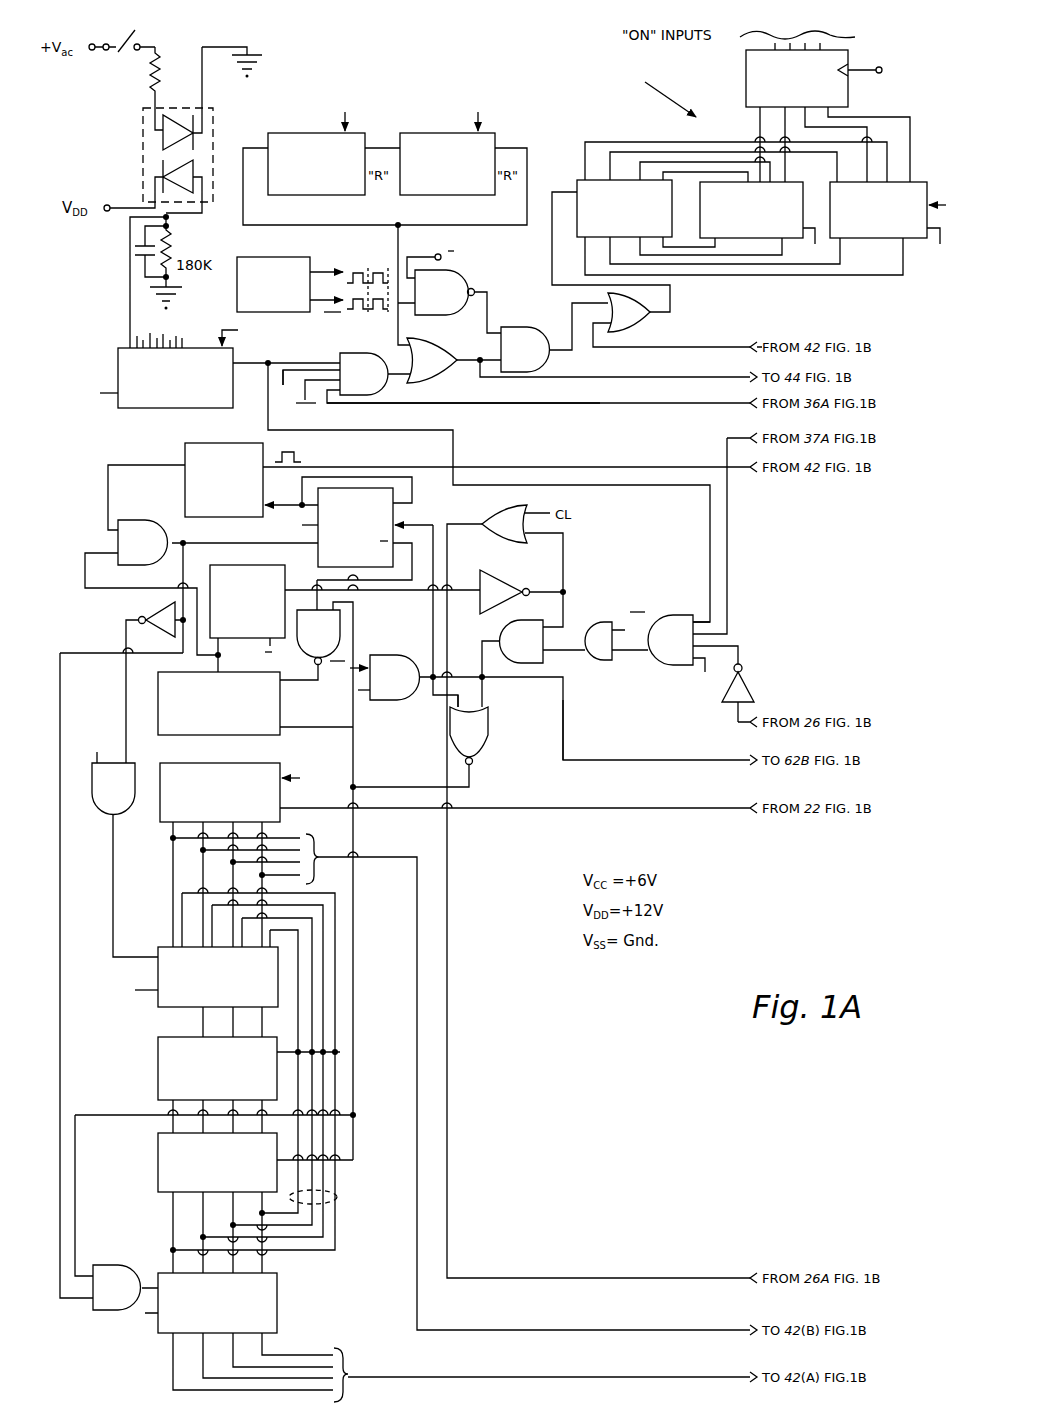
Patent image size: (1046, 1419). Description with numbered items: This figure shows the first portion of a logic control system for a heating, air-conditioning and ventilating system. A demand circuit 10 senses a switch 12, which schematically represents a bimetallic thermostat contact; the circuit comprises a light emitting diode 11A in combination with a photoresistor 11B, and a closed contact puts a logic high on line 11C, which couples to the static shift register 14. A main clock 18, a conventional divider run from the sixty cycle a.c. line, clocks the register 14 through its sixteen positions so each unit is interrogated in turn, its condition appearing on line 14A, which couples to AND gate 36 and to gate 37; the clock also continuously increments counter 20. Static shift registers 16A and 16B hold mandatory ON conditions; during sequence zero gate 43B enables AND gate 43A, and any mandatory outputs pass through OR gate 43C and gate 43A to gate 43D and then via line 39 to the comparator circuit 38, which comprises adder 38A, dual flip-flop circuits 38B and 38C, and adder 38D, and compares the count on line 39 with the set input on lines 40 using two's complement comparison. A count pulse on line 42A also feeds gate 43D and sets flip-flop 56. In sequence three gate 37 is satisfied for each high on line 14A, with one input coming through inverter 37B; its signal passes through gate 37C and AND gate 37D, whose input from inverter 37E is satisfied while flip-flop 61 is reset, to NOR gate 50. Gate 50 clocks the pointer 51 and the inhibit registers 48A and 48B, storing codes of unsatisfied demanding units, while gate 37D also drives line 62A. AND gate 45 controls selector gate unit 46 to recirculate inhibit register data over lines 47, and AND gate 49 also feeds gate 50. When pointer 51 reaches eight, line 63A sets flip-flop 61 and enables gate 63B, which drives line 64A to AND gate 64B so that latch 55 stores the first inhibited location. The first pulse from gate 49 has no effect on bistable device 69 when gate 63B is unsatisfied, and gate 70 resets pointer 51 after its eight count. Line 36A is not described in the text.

The demand circuit 10 is at (224, 136).
The light emitting diode 11A is at (182, 120).
The photoresistor 11B is at (183, 196).
The line 11C is at (130, 257).
The switch 12 is at (122, 56).
The register 14 is at (186, 376).
The line 14A is at (317, 362).
The static shift register 16A is at (330, 162).
The static shift register 16B is at (463, 162).
The main clock 18 is at (320, 252).
The counter 20 is at (290, 822).
The AND gate 36 is at (491, 385).
The AND gate input line 36A is at (365, 404).
The gate 37 is at (693, 567).
The inverter 37B is at (752, 691).
The gate 37C is at (598, 661).
The AND gate 37D is at (512, 648).
The inverter 37E is at (500, 577).
The comparator circuit 38 is at (659, 90).
The adder 38A is at (632, 202).
The dual flip-flop circuit 38B is at (762, 204).
The dual flip-flop circuit 38C is at (887, 204).
The adder 38D is at (810, 74).
The line 39 is at (671, 290).
The lines 40 is at (813, 37).
The line 42A is at (658, 348).
The AND gate 43A is at (554, 337).
The gate 43B is at (449, 292).
The OR gate 43C is at (578, 360).
The gate 43D is at (650, 318).
The AND gate 45 is at (121, 846).
The selector gate unit 46 is at (153, 1018).
The lines 47 is at (338, 1197).
The inhibit register 48A is at (155, 1077).
The inhibit register 48B is at (155, 1164).
The AND gate 49 is at (540, 707).
The NOR gate 50 is at (420, 732).
The pointer 51 is at (288, 740).
The latch 55 is at (284, 1294).
The flip-flop 56 is at (234, 464).
The flip-flop 61 is at (256, 587).
The line 62A is at (600, 764).
The line 63A is at (85, 561).
The gate 63B is at (218, 542).
The line 64A is at (61, 922).
The AND gate 64B is at (117, 1287).
The bistable device 69 is at (359, 509).
The gate 70 is at (319, 867).